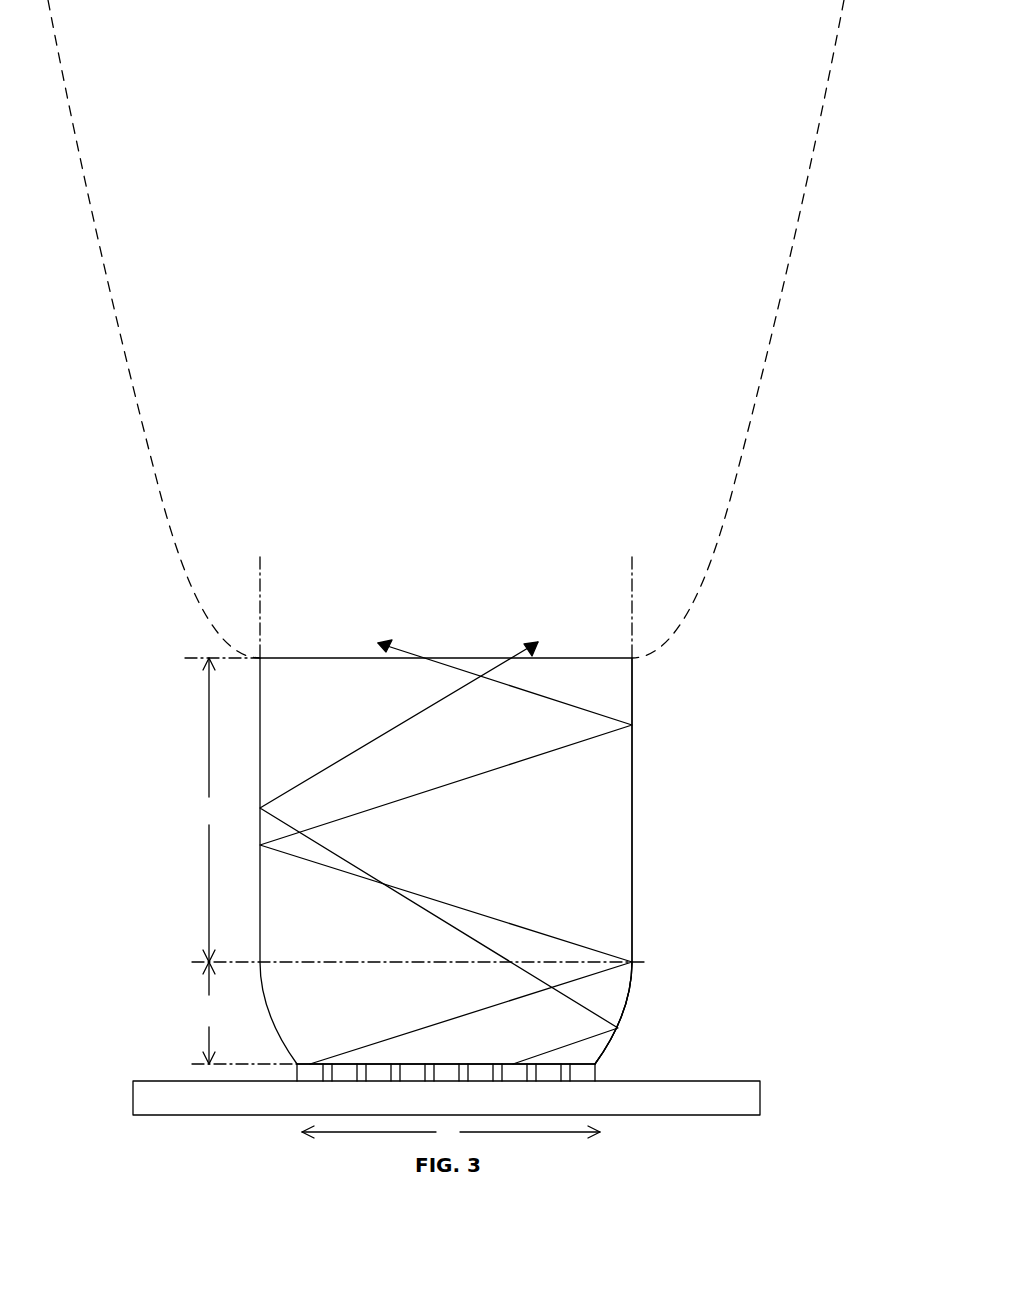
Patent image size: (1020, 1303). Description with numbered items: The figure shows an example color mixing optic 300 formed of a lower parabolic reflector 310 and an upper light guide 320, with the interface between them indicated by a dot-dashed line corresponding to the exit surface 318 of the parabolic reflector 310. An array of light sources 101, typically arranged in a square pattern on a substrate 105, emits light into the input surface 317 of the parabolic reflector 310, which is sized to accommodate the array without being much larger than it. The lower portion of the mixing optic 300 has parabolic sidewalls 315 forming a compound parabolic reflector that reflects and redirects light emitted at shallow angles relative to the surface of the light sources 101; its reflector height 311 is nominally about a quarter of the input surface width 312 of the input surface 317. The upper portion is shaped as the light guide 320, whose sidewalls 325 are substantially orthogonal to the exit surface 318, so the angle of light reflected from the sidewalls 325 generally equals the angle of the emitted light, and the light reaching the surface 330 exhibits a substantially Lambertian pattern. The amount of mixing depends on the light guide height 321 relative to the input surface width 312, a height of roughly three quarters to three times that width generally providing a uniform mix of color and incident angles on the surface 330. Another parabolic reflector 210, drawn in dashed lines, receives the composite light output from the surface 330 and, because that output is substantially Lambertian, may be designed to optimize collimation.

The light sources 101 is at (378, 1073).
The substrate 105 is at (632, 1098).
The parabolic reflector 210 is at (735, 490).
The color mixing optic 300 is at (742, 950).
The parabolic reflector 310 is at (632, 997).
The height h1 311 is at (208, 995).
The width w 312 is at (378, 1132).
The sidewalls 315 is at (618, 1030).
The input surface 317 is at (410, 1064).
The exit surface 318 is at (360, 963).
The light guide 320 is at (632, 828).
The height h2 321 is at (192, 810).
The sidewalls 325 is at (632, 758).
The surface 330 is at (455, 658).